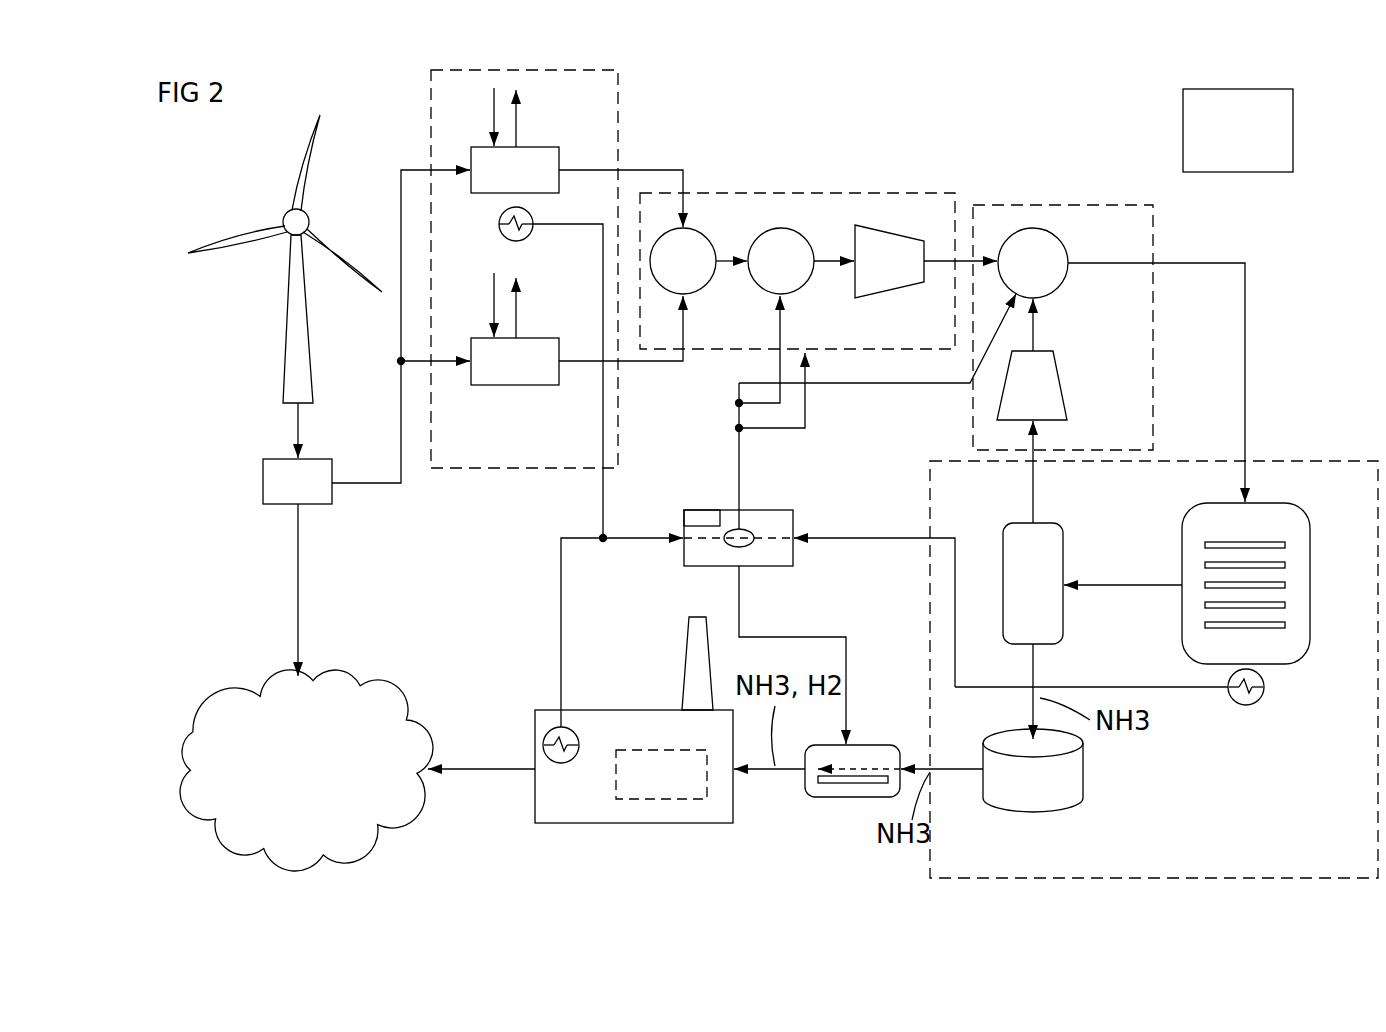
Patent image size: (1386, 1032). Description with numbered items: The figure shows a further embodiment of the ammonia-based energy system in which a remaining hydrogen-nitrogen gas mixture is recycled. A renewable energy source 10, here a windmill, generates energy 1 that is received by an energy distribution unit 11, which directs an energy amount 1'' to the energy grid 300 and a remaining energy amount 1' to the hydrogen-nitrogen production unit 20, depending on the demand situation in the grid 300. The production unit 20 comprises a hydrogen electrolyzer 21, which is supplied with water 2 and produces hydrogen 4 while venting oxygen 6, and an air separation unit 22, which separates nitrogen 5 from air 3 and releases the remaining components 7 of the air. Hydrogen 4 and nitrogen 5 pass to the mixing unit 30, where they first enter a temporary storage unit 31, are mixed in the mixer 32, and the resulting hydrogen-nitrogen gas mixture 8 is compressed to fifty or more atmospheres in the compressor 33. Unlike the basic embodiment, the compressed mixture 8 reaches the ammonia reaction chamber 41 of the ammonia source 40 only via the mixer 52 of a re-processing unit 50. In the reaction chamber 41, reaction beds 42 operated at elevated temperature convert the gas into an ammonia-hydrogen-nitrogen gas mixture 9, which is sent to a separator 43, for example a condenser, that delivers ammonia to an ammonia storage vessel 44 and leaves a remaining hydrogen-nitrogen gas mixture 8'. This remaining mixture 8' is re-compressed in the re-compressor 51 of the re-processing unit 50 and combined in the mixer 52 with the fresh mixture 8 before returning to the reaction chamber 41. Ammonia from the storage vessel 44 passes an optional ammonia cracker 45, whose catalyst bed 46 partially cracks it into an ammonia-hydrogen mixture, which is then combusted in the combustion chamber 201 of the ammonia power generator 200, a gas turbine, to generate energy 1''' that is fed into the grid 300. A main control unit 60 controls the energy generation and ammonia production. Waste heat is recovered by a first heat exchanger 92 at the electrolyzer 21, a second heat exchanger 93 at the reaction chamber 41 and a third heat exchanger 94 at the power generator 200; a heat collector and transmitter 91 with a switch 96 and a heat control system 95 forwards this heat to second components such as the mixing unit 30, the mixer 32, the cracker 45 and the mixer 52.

The energy 1 is at (321, 430).
The remaining energy amount 1' is at (401, 357).
The energy amount 1'' is at (329, 590).
The energy 1''' is at (481, 798).
The water 2 is at (494, 104).
The air 3 is at (494, 297).
The Hydrogen 4 is at (668, 170).
The Nitrogen 5 is at (676, 363).
The Oxygen 6 is at (517, 130).
The oxygen-enriched air 7 is at (517, 320).
The Hydrogen-Nitrogen-gas mixture 8 is at (1109, 355).
The remaining H2-N2-gas mixture 8' is at (1004, 472).
The NH3-H2-N2-gas mixture 9 is at (1121, 585).
The renewable energy source 10 is at (312, 322).
The energy distribution unit 11 is at (263, 491).
The Hydrogen-Nitrogen-production unit 20 is at (471, 469).
The Hydrogen electrolyzer 21 is at (470, 188).
The air separation unit 22 is at (515, 386).
The mixing unit 30 is at (846, 193).
The temporary storage unit 31 is at (706, 287).
The mixer 32 is at (804, 287).
The compressor 33 is at (899, 298).
The NH3 source 40 is at (1337, 461).
The NH3 reaction chamber 41 is at (1305, 656).
The NH3 reaction beds 42 is at (1285, 545).
The separator 43 is at (1063, 628).
The NH3 storage vessel 44 is at (1083, 785).
The NH3 cracker 45 is at (884, 745).
The catalyst bed 46 is at (822, 784).
The re-processing unit 50 is at (1153, 315).
The re-compressor 51 is at (1062, 385).
The mixer 52 is at (1058, 288).
The main control unit 60 is at (1293, 128).
The heat collector and transmitter 91 is at (778, 567).
The first heat exchanger 92 is at (528, 240).
The second heat exchanger 93 is at (1246, 705).
The third heat exchanger 94 is at (556, 728).
The heat control system 95 is at (692, 508).
The switch 96 is at (745, 528).
The NH3 power generator 200 is at (713, 824).
The combustion chamber 201 is at (636, 800).
The energy grid 300 is at (242, 690).